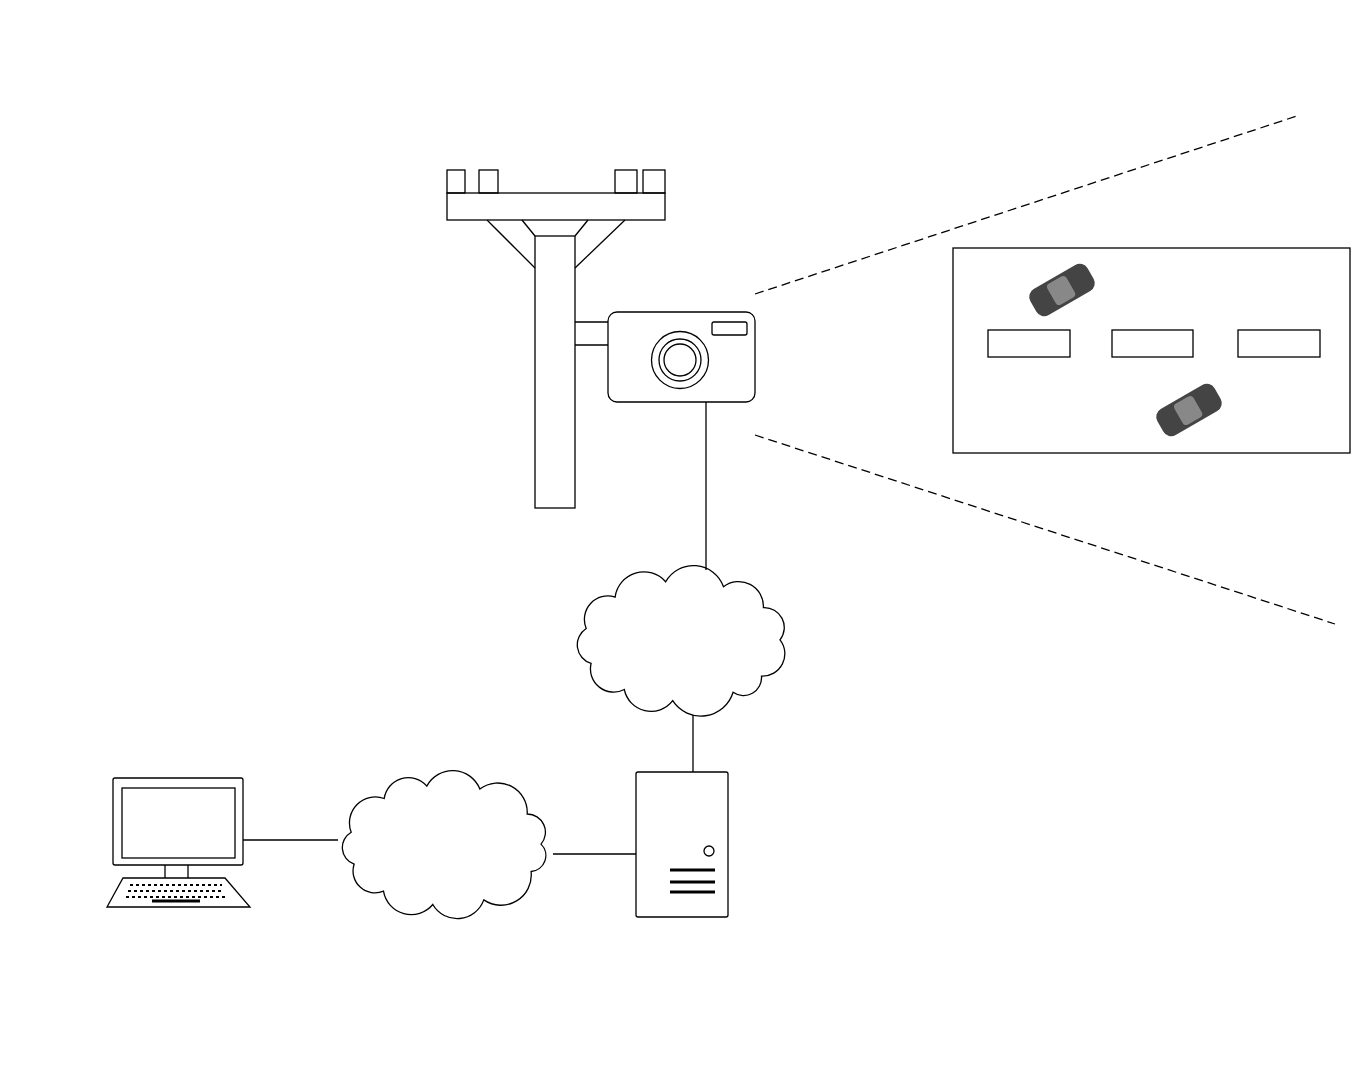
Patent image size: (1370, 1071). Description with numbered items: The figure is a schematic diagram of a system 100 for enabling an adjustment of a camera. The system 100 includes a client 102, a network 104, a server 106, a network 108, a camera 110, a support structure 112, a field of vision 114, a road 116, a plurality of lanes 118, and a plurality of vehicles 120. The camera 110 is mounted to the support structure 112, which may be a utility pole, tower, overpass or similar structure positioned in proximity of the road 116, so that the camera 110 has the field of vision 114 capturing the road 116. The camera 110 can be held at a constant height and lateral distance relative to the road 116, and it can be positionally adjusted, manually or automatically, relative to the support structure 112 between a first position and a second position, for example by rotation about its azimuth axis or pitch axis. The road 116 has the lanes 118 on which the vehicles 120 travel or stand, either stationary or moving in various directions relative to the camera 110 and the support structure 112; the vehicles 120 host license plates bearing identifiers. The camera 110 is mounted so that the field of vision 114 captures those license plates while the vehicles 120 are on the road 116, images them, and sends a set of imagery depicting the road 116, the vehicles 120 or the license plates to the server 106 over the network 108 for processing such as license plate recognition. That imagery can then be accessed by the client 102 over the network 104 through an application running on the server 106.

The system 100 is at (105, 88).
The client 102 is at (194, 956).
The network 104 is at (433, 866).
The server 106 is at (698, 956).
The network 108 is at (668, 663).
The camera 110 is at (673, 312).
The support structure 112 is at (537, 422).
The field of vision 114 is at (978, 510).
The road 116 is at (1278, 453).
The plurality of lanes 118 is at (1260, 300).
The plurality of vehicles 120 is at (1203, 420).